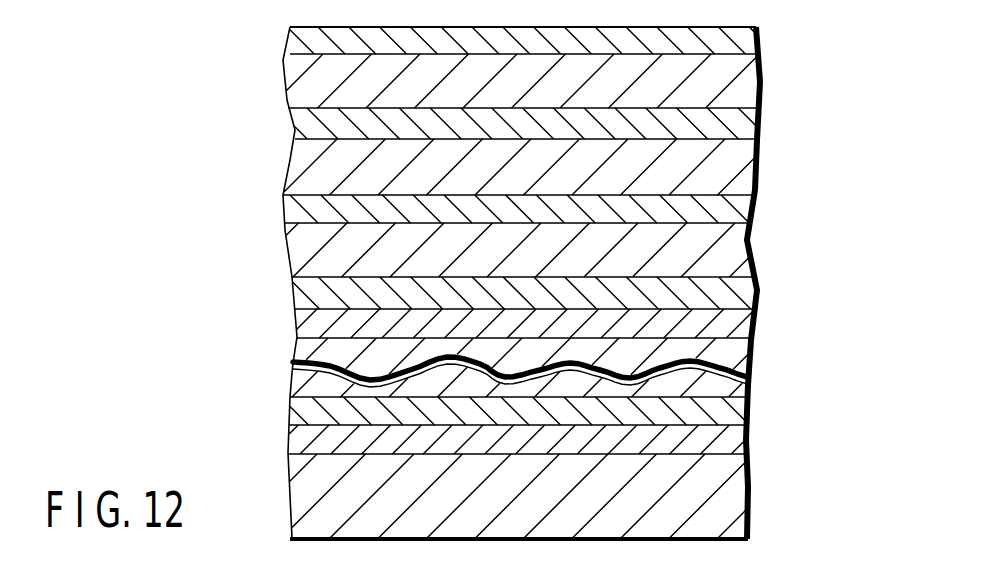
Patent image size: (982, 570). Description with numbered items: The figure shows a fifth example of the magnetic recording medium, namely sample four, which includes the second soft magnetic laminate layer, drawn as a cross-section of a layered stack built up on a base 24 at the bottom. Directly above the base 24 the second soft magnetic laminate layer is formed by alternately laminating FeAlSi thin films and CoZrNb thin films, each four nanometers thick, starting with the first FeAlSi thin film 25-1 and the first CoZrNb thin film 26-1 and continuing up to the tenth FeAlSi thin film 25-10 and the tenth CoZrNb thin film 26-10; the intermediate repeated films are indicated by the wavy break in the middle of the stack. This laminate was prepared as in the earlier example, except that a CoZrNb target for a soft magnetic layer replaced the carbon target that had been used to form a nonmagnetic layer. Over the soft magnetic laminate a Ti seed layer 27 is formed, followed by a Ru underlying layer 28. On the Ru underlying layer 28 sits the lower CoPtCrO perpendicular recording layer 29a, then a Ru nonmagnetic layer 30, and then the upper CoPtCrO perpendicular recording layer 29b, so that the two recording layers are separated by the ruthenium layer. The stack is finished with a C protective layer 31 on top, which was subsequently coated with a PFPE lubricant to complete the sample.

The C protective layer 31 is at (742, 44).
The upper CoPtCrO perpendicular recording layer 29b is at (742, 85).
The Ru nonmagnetic layer 30 is at (742, 126).
The lower CoPtCrO perpendicular recording layer 29a is at (742, 171).
The Ru underlying layer 28 is at (742, 214).
The Ti seed layer 27 is at (740, 260).
The CoZrNb thin film 26-10 is at (740, 301).
The FeAlSi thin film 25-10 is at (742, 330).
The CoZrNb thin film 26-1 is at (742, 410).
The FeAlSi thin film 25-1 is at (742, 443).
The substrate 24 is at (742, 500).